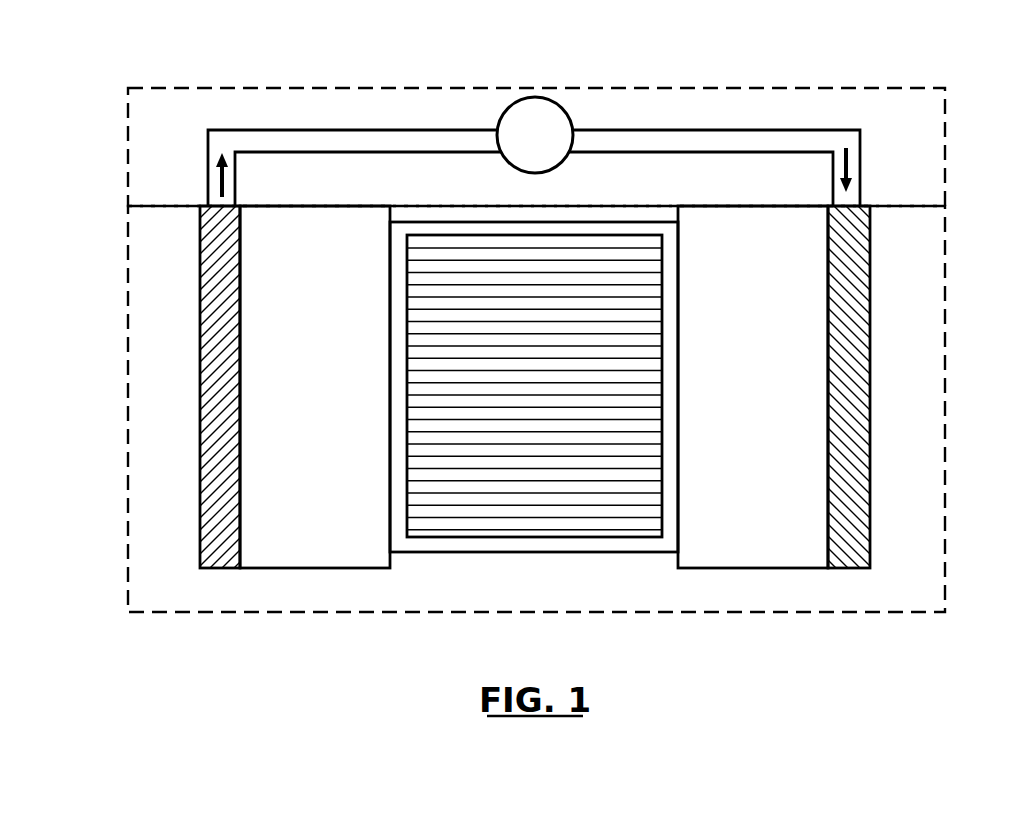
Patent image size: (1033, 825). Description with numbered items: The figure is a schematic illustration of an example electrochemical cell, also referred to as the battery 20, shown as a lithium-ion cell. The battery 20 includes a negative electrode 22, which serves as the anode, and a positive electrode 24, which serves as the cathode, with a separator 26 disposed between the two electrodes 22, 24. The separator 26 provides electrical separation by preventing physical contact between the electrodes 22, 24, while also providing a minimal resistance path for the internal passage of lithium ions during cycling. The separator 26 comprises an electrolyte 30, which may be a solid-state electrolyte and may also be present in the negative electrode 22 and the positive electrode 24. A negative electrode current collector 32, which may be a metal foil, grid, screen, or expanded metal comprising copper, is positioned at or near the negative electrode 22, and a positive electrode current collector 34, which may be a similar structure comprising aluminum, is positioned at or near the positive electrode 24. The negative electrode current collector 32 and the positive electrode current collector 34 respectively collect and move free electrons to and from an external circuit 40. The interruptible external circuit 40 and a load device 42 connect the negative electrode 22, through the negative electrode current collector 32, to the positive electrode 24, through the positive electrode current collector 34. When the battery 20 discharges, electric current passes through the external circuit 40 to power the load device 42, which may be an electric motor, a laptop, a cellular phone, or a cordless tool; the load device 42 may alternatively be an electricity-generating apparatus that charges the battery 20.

The electrochemical cell 20 is at (121, 276).
The negative electrode 22 is at (303, 354).
The positive electrode 24 is at (742, 351).
The separator 26 is at (533, 552).
The electrolyte 30 is at (525, 381).
The negative electrode current collector 32 is at (200, 285).
The positive electrode current collector 34 is at (870, 282).
The external circuit 40 is at (536, 114).
The load device 42 is at (534, 151).